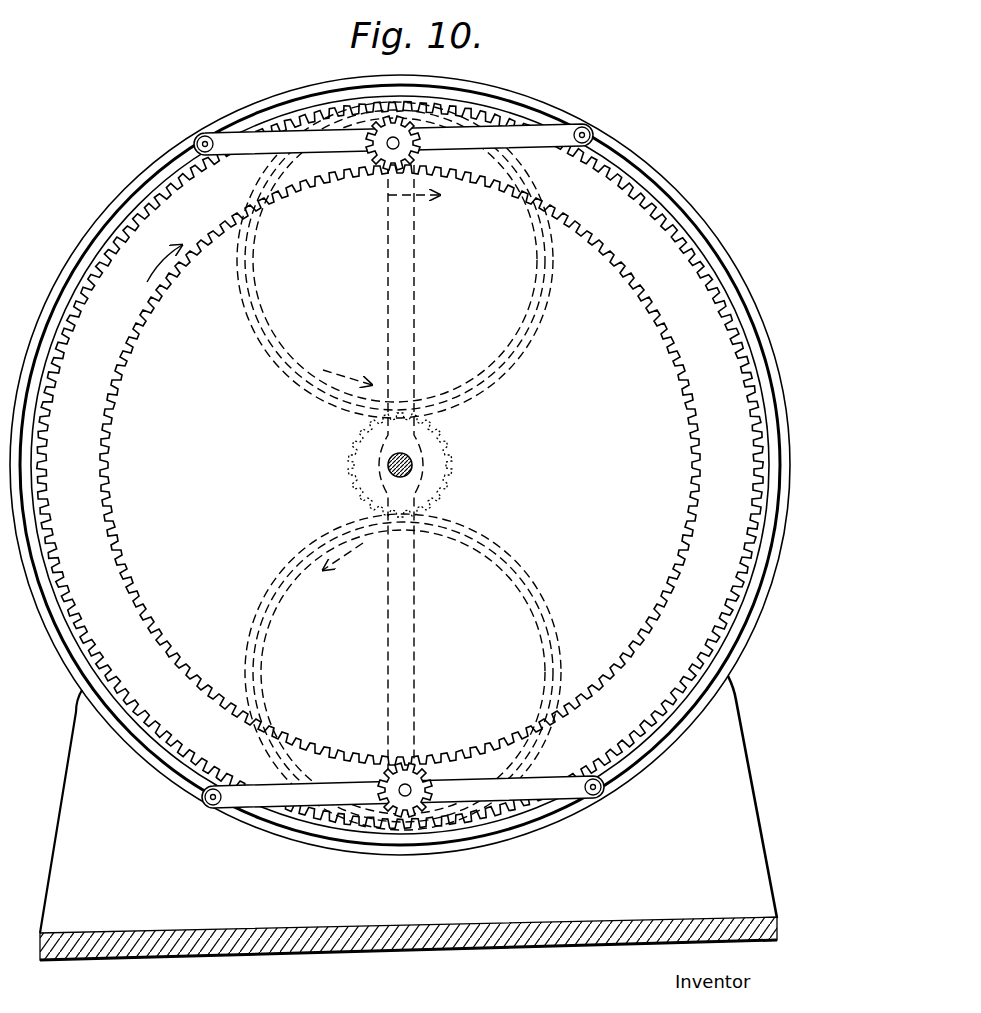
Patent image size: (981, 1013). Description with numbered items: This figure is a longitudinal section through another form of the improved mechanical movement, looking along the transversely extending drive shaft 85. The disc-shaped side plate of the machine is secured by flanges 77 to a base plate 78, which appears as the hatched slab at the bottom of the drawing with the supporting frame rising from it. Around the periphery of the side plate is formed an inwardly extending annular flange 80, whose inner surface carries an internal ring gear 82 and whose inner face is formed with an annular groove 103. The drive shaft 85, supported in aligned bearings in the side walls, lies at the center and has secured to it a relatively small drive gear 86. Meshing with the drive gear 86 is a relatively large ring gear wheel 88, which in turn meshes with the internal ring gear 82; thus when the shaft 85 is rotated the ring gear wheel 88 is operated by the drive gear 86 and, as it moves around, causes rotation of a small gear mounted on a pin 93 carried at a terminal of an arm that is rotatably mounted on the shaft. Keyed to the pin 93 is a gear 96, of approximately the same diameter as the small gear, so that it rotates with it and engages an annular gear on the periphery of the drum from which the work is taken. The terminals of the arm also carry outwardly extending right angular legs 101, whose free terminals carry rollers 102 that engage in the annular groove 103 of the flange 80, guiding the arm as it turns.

The flanges 77 is at (733, 771).
The base plate 78 is at (372, 940).
The inwardly extending annular flange 80 is at (567, 113).
The internal ring gear 82 is at (698, 253).
The drive shaft 85 is at (412, 464).
The drive gear 86 is at (445, 485).
The ring gear wheel 88 is at (530, 186).
The pin 93 is at (387, 150).
The gear 96 is at (423, 133).
The right angular leg 101 is at (272, 142).
The roller 102 is at (207, 135).
The annular groove 103 is at (605, 150).